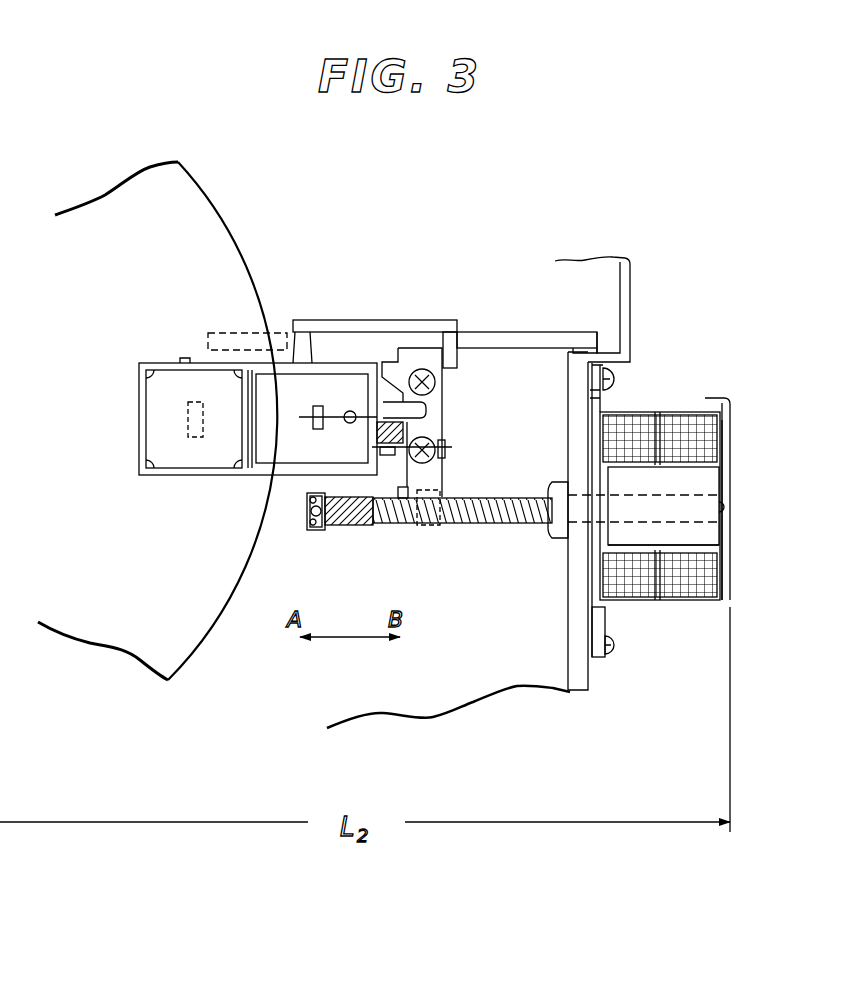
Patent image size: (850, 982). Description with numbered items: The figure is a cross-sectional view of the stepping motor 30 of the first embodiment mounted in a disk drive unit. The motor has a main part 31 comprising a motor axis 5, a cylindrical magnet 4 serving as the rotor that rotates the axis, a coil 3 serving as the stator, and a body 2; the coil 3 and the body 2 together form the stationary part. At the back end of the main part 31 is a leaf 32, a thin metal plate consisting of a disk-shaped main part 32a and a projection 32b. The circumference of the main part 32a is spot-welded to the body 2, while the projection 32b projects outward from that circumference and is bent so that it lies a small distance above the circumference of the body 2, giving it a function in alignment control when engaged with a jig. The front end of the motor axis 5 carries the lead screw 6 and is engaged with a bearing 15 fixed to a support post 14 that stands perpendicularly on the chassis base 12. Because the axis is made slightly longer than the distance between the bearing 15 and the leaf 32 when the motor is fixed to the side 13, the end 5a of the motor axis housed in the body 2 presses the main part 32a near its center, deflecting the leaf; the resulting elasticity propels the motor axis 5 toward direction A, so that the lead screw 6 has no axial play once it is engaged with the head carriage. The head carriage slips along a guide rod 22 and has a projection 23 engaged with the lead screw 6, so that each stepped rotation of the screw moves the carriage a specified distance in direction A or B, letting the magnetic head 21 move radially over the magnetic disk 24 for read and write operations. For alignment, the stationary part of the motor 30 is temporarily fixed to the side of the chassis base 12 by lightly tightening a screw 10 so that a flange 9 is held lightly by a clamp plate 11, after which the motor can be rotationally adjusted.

The body 2 is at (633, 410).
The coil 3 is at (688, 580).
The cylindrical magnet 4 is at (643, 528).
The motor axis 5 is at (668, 510).
The end of the motor axis 5a is at (727, 503).
The lead screw 6 is at (473, 513).
The flange 9 is at (580, 607).
The screw 10 is at (614, 650).
The clamp plate 11 is at (606, 614).
The chassis base 12 is at (481, 702).
The side 13 is at (577, 680).
The support post 14 is at (313, 530).
The bearing 15 is at (318, 530).
The magnetic head 21 is at (190, 412).
The guide rod 22 is at (503, 342).
The projection 23 is at (428, 522).
The magnetic disk 24 is at (213, 245).
The stepping motor 30 is at (704, 516).
The main part of the motor 31 is at (662, 408).
The leaf 32 is at (734, 477).
The main part of the leaf 32a is at (730, 451).
The projection of the leaf 32b is at (705, 400).